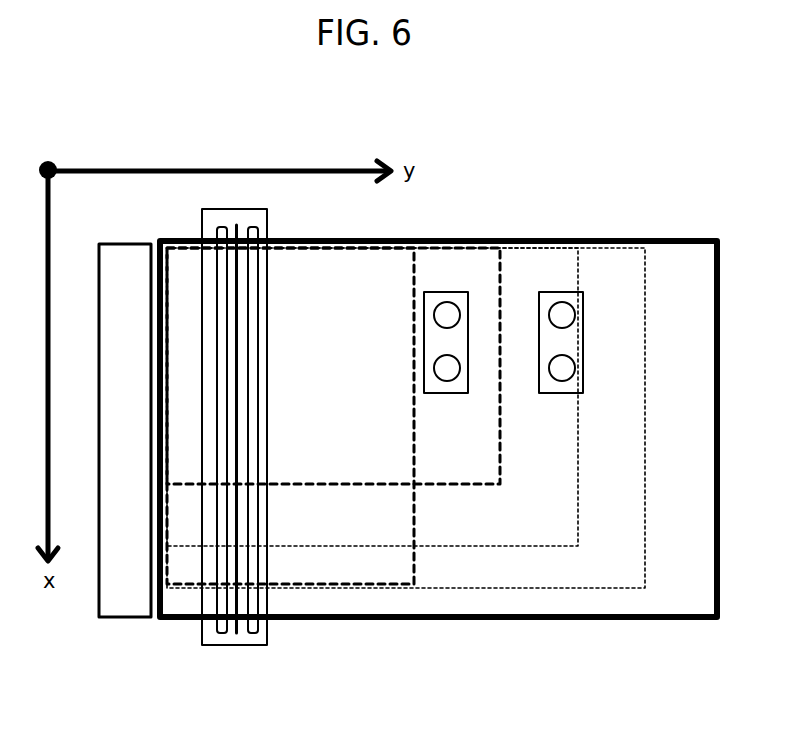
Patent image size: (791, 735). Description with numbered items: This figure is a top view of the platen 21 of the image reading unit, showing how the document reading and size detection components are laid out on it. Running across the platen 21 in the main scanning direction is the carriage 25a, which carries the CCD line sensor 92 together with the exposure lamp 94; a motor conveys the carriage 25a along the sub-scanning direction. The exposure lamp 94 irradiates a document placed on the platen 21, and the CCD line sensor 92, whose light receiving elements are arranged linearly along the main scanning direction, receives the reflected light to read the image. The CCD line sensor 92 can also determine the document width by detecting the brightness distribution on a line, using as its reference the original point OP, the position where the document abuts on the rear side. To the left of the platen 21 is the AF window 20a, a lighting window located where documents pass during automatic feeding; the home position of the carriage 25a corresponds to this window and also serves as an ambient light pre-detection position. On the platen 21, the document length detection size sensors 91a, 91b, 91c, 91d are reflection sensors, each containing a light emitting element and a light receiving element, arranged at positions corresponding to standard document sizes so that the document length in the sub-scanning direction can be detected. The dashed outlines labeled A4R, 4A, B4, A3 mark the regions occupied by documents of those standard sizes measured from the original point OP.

The platen 21 is at (488, 620).
The original point OP is at (155, 243).
The AF window 20a is at (122, 620).
The CCD line sensor 92 is at (235, 628).
The exposure lamp 94 is at (217, 620).
The carriage 25a is at (247, 647).
The document length detection size sensor 91a is at (438, 307).
The document length detection size sensor 91b is at (438, 377).
The document length detection size sensor 91c is at (570, 326).
The document length detection size sensor 91d is at (568, 372).
The A4R size document region A4R is at (290, 416).
The 4A size document region 4A is at (333, 366).
The B4 size document region B4 is at (372, 397).
The A3 size document region A3 is at (406, 418).